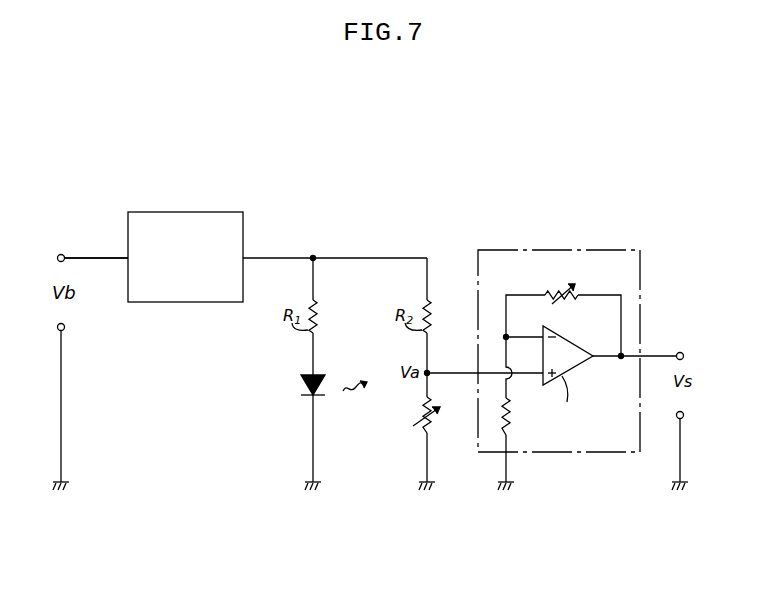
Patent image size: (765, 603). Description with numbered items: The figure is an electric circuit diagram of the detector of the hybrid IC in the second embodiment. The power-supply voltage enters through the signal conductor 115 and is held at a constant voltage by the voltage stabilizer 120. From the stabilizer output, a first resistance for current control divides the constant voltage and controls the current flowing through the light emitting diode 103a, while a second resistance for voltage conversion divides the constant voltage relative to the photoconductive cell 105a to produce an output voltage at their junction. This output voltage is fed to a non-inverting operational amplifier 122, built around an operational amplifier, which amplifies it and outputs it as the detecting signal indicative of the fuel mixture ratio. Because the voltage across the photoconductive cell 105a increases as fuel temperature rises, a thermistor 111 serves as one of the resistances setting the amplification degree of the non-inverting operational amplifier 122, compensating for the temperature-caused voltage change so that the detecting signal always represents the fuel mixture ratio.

The signal conductor 115 is at (92, 256).
The voltage stabilizer 120 is at (225, 211).
The non-inverting operational amplifier 122 is at (581, 356).
The thermistor 111 is at (562, 290).
The light emitting diode 103a is at (302, 393).
The photoconductive cell 105a is at (441, 416).